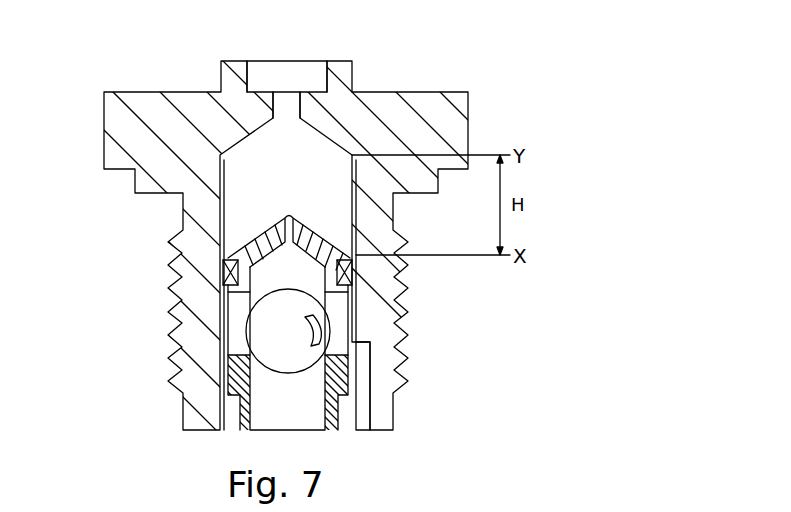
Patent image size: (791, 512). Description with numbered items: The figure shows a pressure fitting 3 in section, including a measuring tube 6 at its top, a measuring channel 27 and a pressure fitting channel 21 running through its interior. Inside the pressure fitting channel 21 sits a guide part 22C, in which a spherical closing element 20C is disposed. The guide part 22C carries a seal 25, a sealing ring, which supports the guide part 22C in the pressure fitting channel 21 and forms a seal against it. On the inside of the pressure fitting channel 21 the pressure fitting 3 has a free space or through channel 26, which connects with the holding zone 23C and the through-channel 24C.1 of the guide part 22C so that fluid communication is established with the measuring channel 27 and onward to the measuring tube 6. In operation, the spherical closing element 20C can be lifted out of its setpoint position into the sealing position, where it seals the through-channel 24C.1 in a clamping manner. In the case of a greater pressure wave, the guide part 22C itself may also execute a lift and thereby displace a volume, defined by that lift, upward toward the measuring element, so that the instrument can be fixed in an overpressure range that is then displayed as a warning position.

The pressure fitting 3 is at (554, 97).
The pressure fitting channel 21 is at (253, 152).
The measuring tube 6 is at (308, 70).
The measuring channel 27 is at (288, 110).
The free space or through channel 26 is at (362, 410).
The through-channel 24C.1 is at (296, 218).
The holding zone 23C is at (341, 310).
The guide part 22C is at (347, 372).
The seal 25 is at (348, 276).
The spherical closing element 20C is at (268, 318).